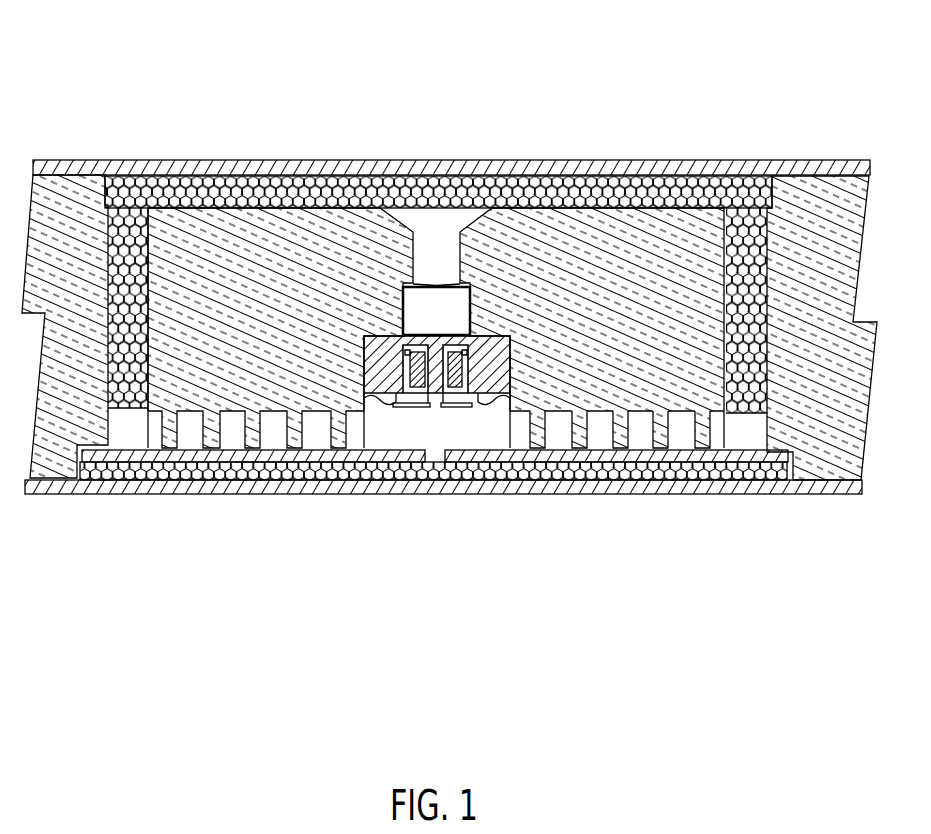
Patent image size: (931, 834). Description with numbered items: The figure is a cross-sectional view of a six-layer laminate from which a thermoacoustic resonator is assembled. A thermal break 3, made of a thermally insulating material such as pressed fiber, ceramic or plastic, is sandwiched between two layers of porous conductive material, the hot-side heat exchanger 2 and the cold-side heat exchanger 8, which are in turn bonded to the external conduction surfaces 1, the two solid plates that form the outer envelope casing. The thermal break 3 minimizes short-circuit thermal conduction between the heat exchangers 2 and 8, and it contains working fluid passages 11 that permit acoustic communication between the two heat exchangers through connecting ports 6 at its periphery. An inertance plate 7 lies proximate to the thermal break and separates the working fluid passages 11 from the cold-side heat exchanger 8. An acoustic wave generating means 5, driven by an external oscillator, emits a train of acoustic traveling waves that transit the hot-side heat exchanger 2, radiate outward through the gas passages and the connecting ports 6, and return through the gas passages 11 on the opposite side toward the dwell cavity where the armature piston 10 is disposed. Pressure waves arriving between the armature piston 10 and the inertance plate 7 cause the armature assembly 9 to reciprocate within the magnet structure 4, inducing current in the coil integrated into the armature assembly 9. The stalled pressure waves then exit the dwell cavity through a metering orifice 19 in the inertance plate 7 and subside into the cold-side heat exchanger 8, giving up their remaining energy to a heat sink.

The external conduction surfaces 1 is at (77, 160).
The hot-side heat exchanger 2 is at (228, 185).
The thermal break 3 is at (300, 235).
The magnet structure 4 is at (492, 350).
The acoustic wave generating means 5 is at (428, 300).
The connecting ports 6 is at (743, 227).
The inertance plate 7 is at (132, 452).
The cold-side heat exchanger 8 is at (198, 472).
The armature assembly 9 is at (415, 385).
The armature piston 10 is at (482, 410).
The working fluid passages 11 is at (620, 446).
The metering orifice 19 is at (435, 460).